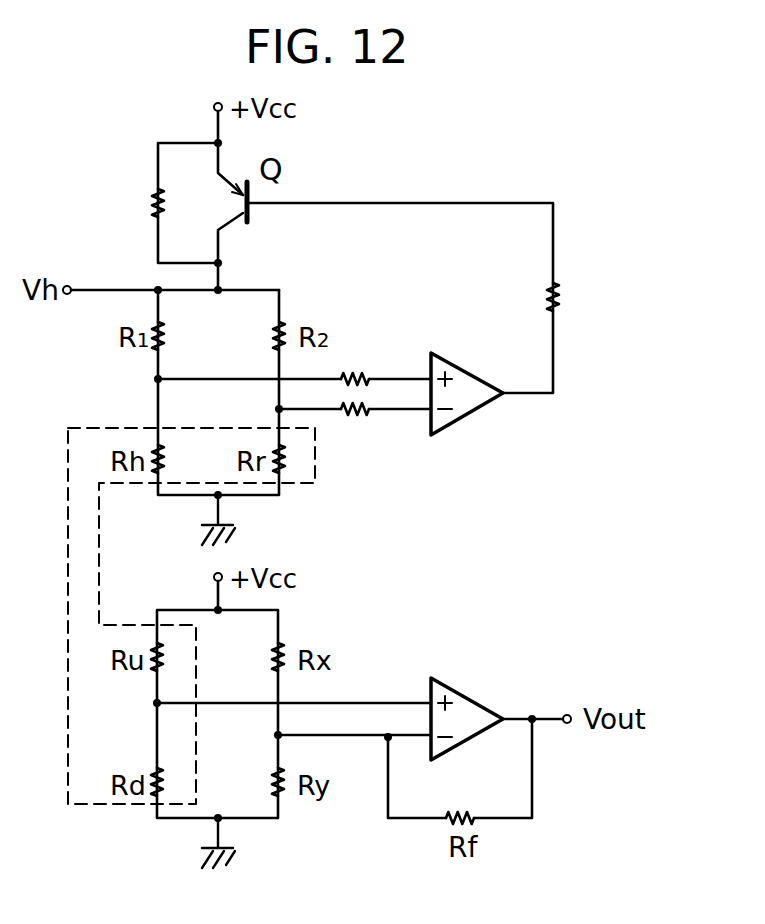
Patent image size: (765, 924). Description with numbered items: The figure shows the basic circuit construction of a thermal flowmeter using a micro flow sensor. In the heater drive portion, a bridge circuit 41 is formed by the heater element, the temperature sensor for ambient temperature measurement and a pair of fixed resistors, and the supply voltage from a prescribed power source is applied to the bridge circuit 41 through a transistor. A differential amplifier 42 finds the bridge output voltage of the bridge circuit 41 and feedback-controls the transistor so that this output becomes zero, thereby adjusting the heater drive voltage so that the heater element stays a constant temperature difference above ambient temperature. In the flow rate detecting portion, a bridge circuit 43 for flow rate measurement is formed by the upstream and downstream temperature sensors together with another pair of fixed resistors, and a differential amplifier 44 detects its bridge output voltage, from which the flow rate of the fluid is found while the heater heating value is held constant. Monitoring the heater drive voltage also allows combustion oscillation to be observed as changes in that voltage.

The bridge circuit 41 is at (261, 307).
The differential amplifier 42 is at (463, 368).
The bridge circuit for flow rate measurement 43 is at (259, 630).
The differential amplifier 44 is at (476, 701).